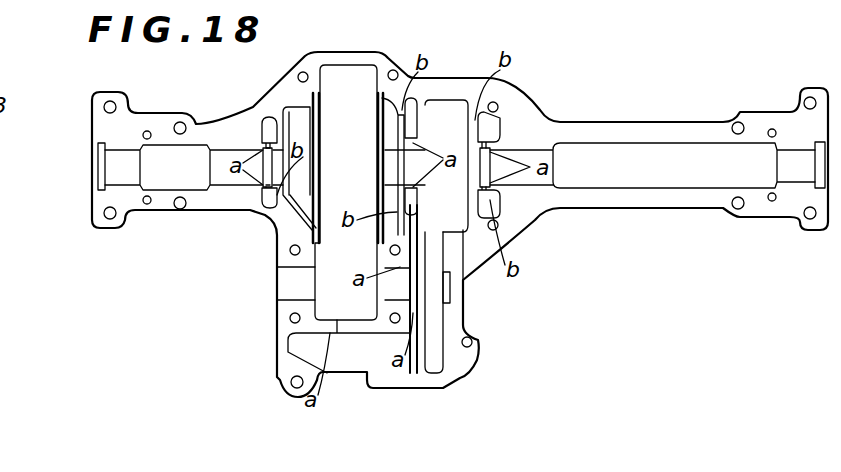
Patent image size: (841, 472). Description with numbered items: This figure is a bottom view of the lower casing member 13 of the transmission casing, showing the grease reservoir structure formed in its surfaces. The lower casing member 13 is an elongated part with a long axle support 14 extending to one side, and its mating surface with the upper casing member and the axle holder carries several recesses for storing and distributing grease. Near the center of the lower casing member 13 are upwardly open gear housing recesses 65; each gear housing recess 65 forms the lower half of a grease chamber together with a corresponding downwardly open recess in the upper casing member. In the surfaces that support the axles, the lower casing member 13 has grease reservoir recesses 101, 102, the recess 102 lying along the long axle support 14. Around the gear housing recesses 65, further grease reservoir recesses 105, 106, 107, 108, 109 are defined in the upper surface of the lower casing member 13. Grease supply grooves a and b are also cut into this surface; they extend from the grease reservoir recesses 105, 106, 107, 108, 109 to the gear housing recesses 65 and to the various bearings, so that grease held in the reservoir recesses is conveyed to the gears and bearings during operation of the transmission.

The lower casing member 13 is at (287, 242).
The long axle support 14 is at (680, 195).
The gear housing recess 65 is at (355, 97).
The grease reservoir recess 101 is at (170, 168).
The grease reservoir recess 102 is at (688, 160).
The grease reservoir recess 105 is at (367, 350).
The grease reservoir recess 106 is at (410, 228).
The grease reservoir recess 107 is at (410, 135).
The grease reservoir recess 108 is at (490, 130).
The grease reservoir recess 109 is at (267, 120).